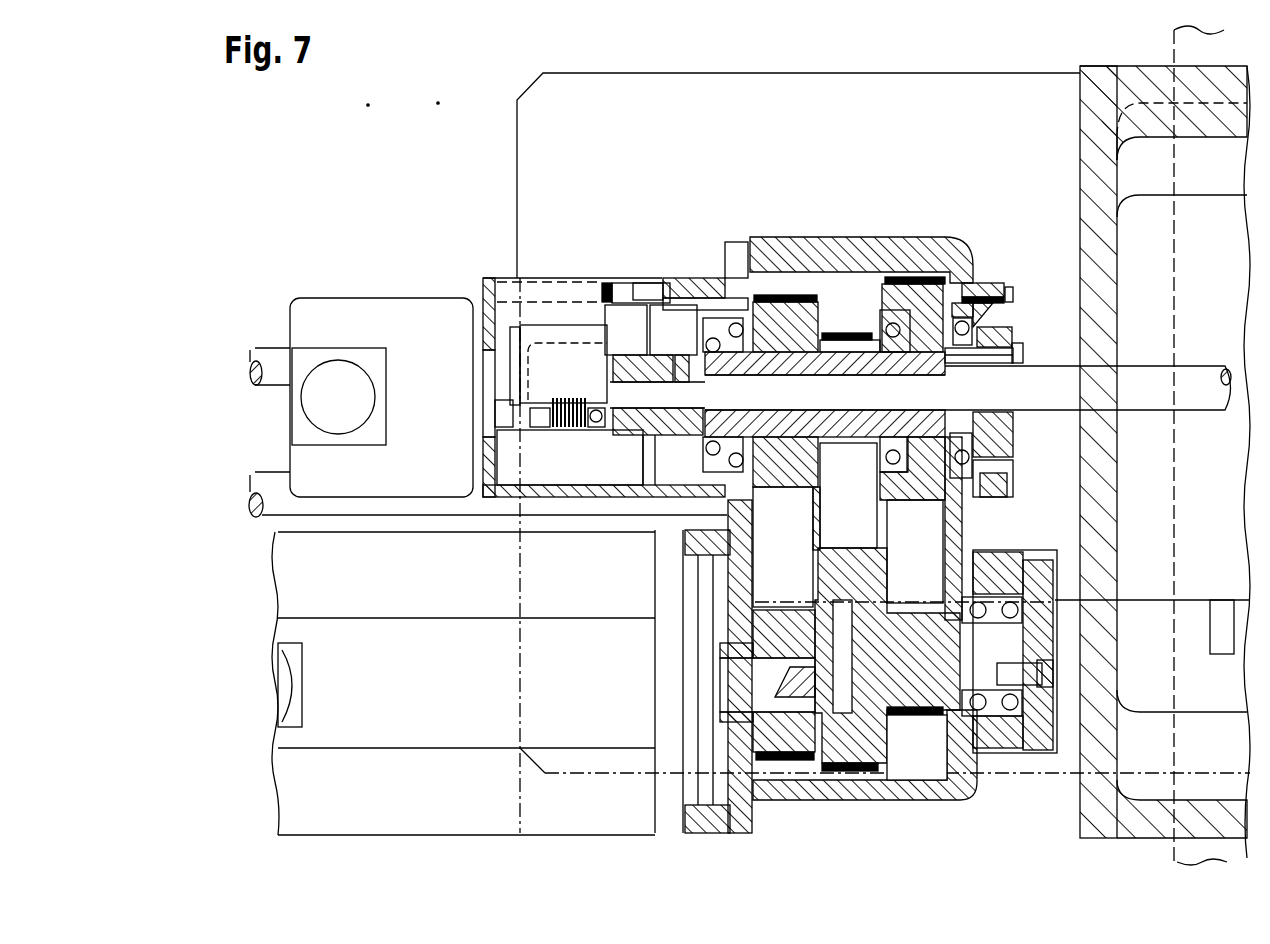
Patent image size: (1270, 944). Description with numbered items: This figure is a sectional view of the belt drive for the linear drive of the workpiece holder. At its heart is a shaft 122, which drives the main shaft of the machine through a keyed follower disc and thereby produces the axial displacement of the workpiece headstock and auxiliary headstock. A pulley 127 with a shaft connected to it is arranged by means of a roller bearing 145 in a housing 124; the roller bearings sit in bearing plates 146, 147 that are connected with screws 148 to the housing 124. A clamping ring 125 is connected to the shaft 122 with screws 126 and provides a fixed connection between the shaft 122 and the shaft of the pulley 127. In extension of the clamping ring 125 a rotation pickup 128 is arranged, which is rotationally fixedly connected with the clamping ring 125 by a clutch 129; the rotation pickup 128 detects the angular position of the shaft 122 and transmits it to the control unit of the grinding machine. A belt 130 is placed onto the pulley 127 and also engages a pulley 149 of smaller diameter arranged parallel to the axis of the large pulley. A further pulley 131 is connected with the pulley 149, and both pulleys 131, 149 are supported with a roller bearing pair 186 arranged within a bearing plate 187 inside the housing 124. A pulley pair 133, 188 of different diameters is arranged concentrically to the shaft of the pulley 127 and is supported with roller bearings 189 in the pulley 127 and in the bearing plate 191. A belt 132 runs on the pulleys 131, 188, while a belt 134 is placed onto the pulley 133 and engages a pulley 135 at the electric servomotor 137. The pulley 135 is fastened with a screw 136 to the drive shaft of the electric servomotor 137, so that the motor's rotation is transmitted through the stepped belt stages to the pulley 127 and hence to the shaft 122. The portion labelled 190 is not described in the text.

The shaft 122 is at (1160, 412).
The housing 124 is at (960, 261).
The clamping ring 125 is at (645, 358).
The screws 126 is at (681, 358).
The pulley 127 is at (883, 285).
The rotation pickup 128 is at (400, 315).
The clutch 129 is at (572, 403).
The belt 130 is at (910, 285).
The pulley 131 is at (868, 774).
The belt 132 is at (826, 332).
The pulley 133 is at (822, 295).
The belt 134 is at (780, 288).
The pulley 135 is at (753, 622).
The screw 136 is at (838, 683).
The electric servomotor 137 is at (420, 746).
The roller bearing 145 is at (710, 283).
The bearing plate 146 is at (950, 364).
The bearing plate 147 is at (988, 287).
The screws 148 is at (680, 279).
The pulley 149 is at (928, 688).
The roller bearing pair 186 is at (1002, 572).
The bearing plate 187 is at (995, 752).
The pulley 188 is at (865, 340).
The roller bearings 189 is at (730, 359).
The shaft hub 190 is at (773, 370).
The bearing plate 191 is at (711, 481).